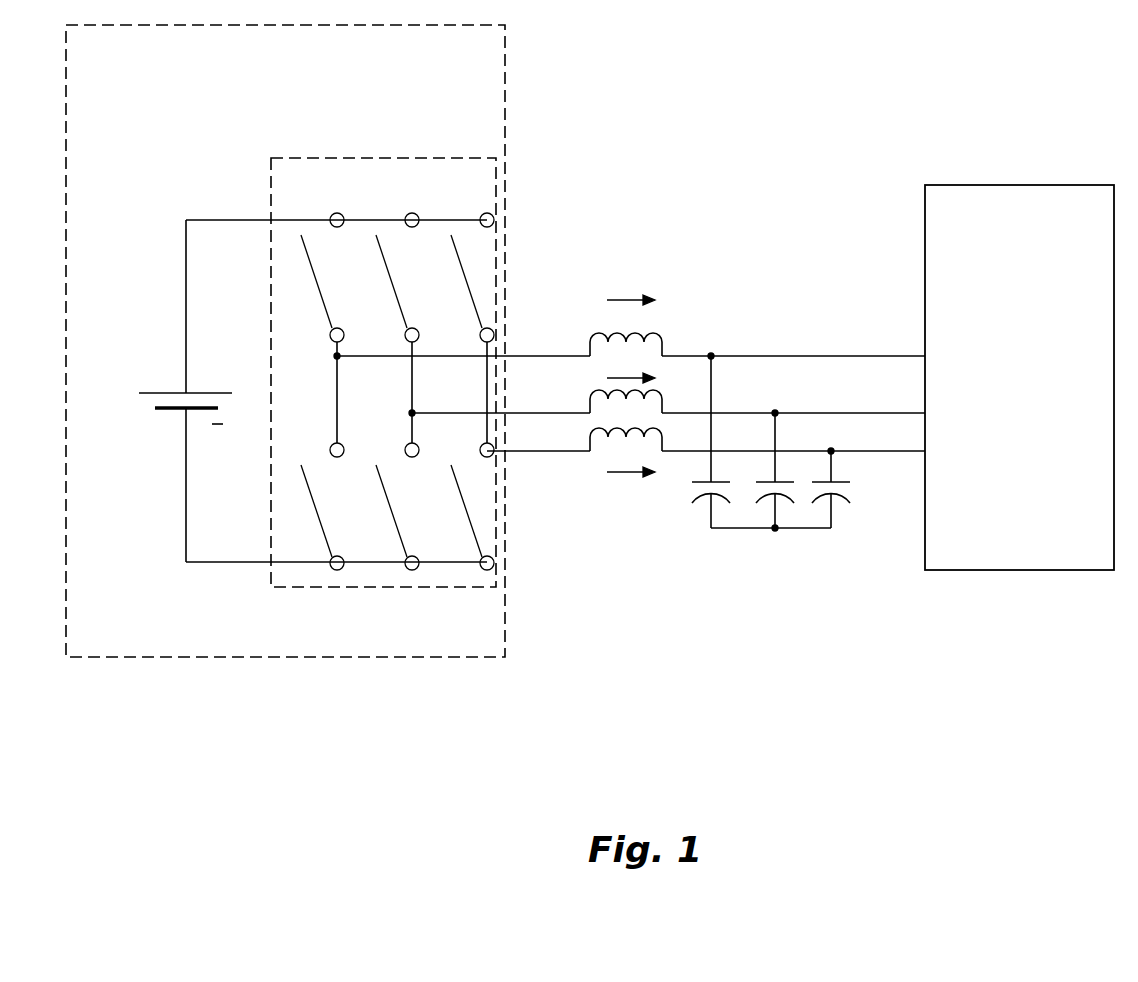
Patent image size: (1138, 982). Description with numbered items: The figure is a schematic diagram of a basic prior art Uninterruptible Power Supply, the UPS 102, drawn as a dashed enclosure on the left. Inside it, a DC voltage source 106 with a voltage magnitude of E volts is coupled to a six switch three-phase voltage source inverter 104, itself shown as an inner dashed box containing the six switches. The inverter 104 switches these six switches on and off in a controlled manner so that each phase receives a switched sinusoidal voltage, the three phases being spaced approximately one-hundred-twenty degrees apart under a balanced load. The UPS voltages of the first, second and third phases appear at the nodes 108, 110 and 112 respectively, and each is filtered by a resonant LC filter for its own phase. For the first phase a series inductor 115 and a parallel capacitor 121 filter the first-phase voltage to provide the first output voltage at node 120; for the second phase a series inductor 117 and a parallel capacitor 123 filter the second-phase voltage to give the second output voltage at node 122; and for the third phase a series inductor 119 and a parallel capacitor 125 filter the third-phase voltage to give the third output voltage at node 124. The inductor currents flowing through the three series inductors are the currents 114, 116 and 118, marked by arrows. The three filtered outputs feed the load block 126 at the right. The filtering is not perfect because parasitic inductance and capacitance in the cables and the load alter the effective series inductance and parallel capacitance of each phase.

The Uninterruptible Power Supply 102 is at (150, 77).
The six switch three-phase voltage source inverter 104 is at (308, 152).
The DC voltage source 106 is at (150, 372).
The node 108 is at (563, 355).
The node 110 is at (568, 414).
The node 112 is at (552, 452).
The inductor current 114 is at (643, 292).
The series inductor 115 is at (660, 340).
The inductor current 116 is at (655, 377).
The series inductor 117 is at (663, 394).
The inductor current 118 is at (625, 473).
The series inductor 119 is at (663, 433).
The node 120 is at (776, 357).
The parallel capacitor 121 is at (692, 512).
The node 122 is at (813, 414).
The parallel capacitor 123 is at (758, 510).
The node 124 is at (882, 456).
The parallel capacitor 125 is at (822, 512).
The load 126 is at (1042, 431).